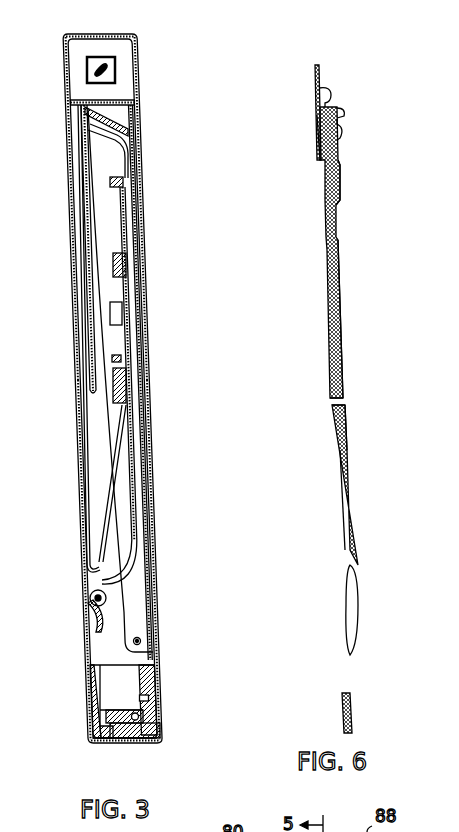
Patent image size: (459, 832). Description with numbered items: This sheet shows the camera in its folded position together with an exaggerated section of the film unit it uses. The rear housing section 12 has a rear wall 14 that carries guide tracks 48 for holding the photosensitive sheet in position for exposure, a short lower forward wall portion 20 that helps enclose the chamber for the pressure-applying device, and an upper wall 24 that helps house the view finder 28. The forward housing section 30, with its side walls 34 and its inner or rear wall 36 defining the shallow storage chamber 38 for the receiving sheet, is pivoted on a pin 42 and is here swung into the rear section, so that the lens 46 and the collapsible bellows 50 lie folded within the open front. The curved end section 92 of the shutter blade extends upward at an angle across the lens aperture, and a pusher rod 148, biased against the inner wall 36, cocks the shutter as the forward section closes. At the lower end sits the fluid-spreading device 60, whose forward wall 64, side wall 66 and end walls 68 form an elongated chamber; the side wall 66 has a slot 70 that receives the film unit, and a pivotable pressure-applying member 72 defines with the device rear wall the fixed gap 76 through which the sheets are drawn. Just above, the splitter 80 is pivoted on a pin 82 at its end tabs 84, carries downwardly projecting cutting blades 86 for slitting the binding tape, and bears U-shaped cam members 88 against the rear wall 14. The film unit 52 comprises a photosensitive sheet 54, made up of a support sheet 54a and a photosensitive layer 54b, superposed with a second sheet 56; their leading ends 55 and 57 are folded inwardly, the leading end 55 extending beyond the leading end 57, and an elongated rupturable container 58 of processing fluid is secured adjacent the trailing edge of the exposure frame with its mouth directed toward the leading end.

In FIG. 3, the rear housing section 12 is at (60, 153).
In FIG. 3, the rear wall 14 is at (75, 308).
In FIG. 3, the lower forward wall portion 20 is at (160, 672).
In FIG. 3, the upper wall 24 is at (103, 34).
In FIG. 3, the view finder 28 is at (138, 57).
In FIG. 3, the forward housing section 30 is at (153, 315).
In FIG. 3, the side walls 34 is at (148, 513).
In FIG. 3, the inner or rear wall 36 is at (138, 483).
In FIG. 3, the storage chamber 38 is at (141, 405).
In FIG. 3, the pin 42 is at (140, 640).
In FIG. 3, the lens 46 is at (120, 122).
In FIG. 3, the guide tracks 48 is at (90, 453).
In FIG. 3, the collapsible bellows 50 is at (88, 396).
In FIG. 6, the film unit 52 is at (346, 296).
In FIG. 6, the photosensitive sheet 54 is at (330, 456).
In FIG. 6, the support sheet 54a is at (332, 428).
In FIG. 6, the photosensitive layer 54b is at (335, 380).
In FIG. 6, the folded leading end of photosensitive sheet 55 is at (325, 128).
In FIG. 6, the second sheet 56 is at (349, 348).
In FIG. 6, the folded leading end of second sheet 57 is at (342, 180).
In FIG. 6, the rupturable container 58 is at (357, 597).
In FIG. 3, the fluid-spreading device 60 is at (118, 754).
In FIG. 3, the forward wall 64 is at (155, 709).
In FIG. 3, the side wall 66 is at (152, 744).
In FIG. 3, the end walls 68 is at (124, 679).
In FIG. 3, the slot 70 is at (108, 746).
In FIG. 3, the pressure-applying member 72 is at (142, 699).
In FIG. 3, the gap 76 is at (100, 700).
In FIG. 3, the splitter 80 is at (86, 614).
In FIG. 6, the splitter 80 is at (349, 125).
In FIG. 6, the pin 82 is at (345, 107).
In FIG. 6, the end tabs 84 is at (347, 115).
In FIG. 6, the cutting blades 86 is at (337, 137).
In FIG. 6, the cam members 88 is at (330, 92).
In FIG. 3, the end section 92 is at (125, 150).
In FIG. 3, the pusher rod 148 is at (118, 448).